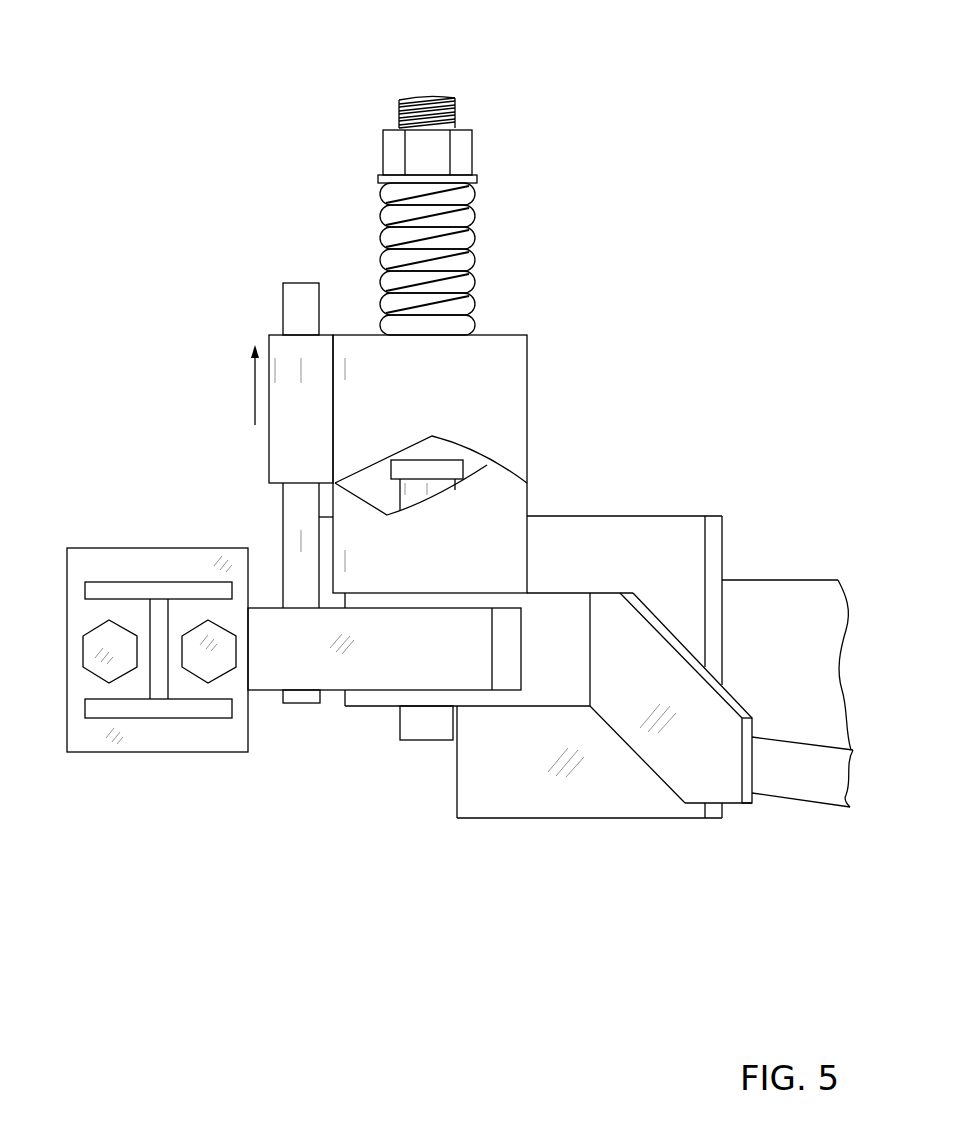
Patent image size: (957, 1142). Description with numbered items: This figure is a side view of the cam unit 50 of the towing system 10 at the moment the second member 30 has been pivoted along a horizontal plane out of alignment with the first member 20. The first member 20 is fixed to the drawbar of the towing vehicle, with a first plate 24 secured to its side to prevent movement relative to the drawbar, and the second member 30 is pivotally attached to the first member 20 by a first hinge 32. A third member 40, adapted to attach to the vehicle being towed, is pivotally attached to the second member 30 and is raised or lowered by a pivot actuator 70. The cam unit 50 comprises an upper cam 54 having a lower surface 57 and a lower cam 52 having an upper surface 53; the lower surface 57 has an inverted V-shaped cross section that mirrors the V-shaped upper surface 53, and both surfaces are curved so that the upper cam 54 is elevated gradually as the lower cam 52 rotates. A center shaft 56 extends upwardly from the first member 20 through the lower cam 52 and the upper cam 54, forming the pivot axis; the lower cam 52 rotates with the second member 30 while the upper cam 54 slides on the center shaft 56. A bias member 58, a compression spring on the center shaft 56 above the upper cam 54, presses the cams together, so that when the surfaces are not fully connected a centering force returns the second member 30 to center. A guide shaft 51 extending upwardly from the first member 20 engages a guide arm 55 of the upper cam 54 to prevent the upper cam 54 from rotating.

The towing system 10 is at (113, 135).
The first member 20 is at (285, 647).
The first plate 24 is at (127, 560).
The second member 30 is at (373, 707).
The first hinge 32 is at (492, 668).
The third member 40 is at (787, 580).
The cam unit 50 is at (509, 326).
The guide shaft 51 is at (300, 283).
The lower cam 52 is at (507, 530).
The upper surface 53 is at (363, 503).
The upper cam 54 is at (493, 437).
The guide arm 55 is at (283, 347).
The center shaft 56 is at (437, 487).
The lower surface 57 is at (372, 470).
The bias member 58 is at (467, 211).
The pivot actuator 70 is at (795, 798).